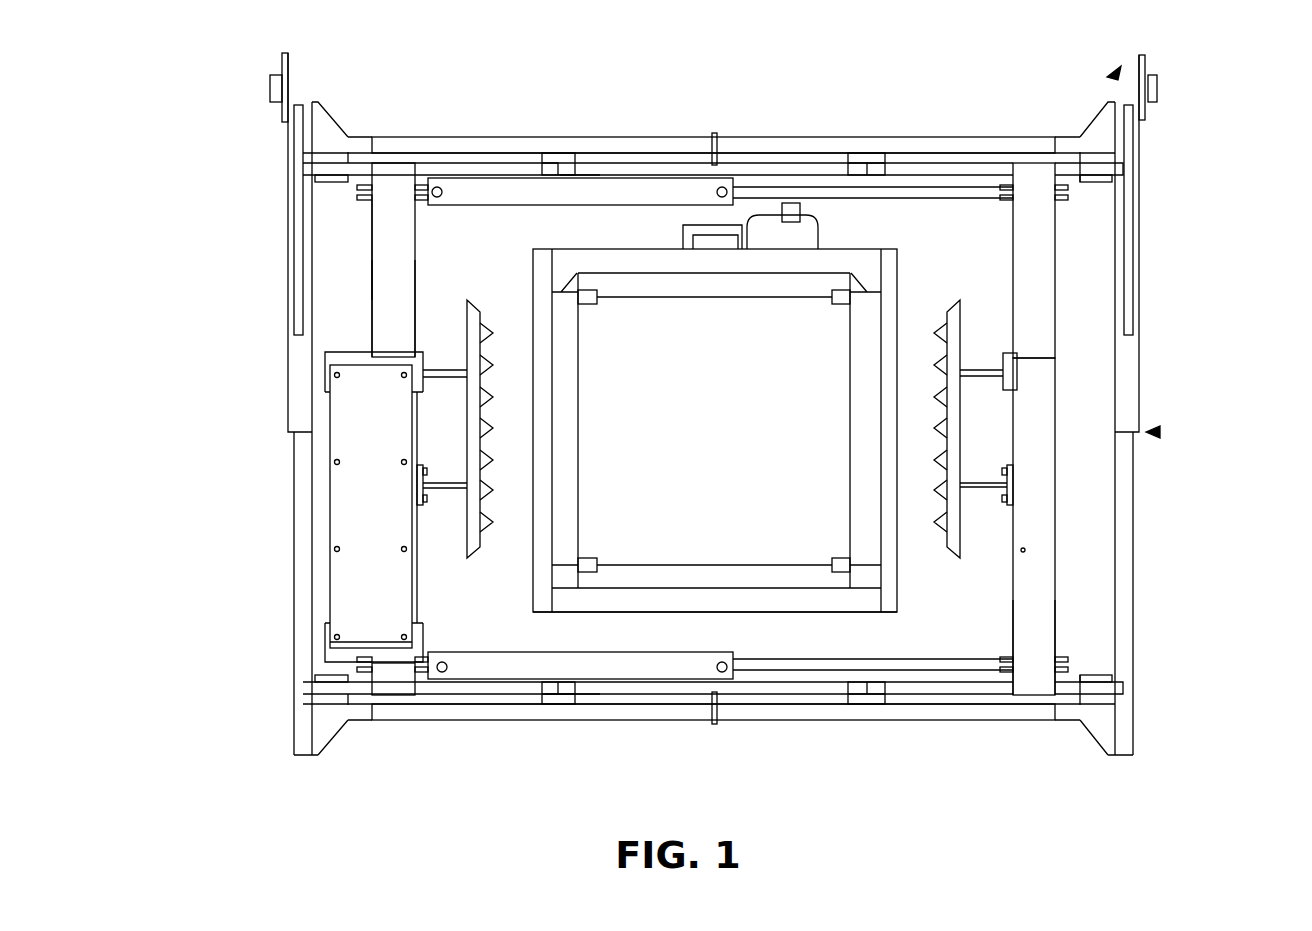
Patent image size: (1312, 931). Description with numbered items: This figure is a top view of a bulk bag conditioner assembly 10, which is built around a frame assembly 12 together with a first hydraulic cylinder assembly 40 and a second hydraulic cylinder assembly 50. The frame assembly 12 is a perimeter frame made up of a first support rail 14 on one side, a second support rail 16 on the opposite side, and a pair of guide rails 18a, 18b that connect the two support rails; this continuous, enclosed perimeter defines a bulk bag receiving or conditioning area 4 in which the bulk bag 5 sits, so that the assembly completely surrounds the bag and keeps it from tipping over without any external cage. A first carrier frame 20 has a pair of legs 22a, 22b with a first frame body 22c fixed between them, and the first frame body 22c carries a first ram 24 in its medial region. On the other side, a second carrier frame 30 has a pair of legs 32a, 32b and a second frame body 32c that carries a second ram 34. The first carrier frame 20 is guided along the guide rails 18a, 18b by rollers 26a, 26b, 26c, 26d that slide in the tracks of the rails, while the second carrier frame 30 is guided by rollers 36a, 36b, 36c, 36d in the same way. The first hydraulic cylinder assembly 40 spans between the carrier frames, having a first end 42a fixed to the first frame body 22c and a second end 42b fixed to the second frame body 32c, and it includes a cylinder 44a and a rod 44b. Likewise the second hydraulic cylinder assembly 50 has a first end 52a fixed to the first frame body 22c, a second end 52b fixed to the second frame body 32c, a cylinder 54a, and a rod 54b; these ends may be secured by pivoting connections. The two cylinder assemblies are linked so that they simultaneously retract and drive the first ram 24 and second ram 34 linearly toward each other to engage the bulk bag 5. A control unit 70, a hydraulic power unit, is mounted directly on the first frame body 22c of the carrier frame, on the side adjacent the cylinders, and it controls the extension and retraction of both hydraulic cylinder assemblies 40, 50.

The bulk bag conditioning area 4 is at (880, 625).
The bulk bag 5 is at (763, 322).
The bulk bag conditioner assembly 10 is at (1118, 72).
The frame assembly 12 is at (1158, 432).
The first support rail 14 is at (300, 555).
The second support rail 16 is at (1130, 515).
The guide rail 18a is at (1060, 135).
The guide rail 18b is at (983, 712).
The first carrier frame 20 is at (395, 245).
The leg 22a is at (487, 168).
The leg 22b is at (458, 690).
The first frame body 22c is at (387, 317).
The first ram 24 is at (470, 435).
The roller 26a is at (330, 158).
The roller 26b is at (560, 152).
The roller 26c is at (332, 700).
The roller 26d is at (560, 695).
The second carrier frame 30 is at (1027, 333).
The leg 32a is at (965, 160).
The leg 32b is at (973, 688).
The second frame body 32c is at (1033, 525).
The second ram 34 is at (955, 405).
The roller 36a is at (873, 157).
The roller 36b is at (1093, 157).
The roller 36c is at (870, 698).
The roller 36d is at (1100, 702).
The first hydraulic cylinder assembly 40 is at (633, 192).
The first end 42a is at (405, 186).
The second end 42b is at (1040, 192).
The cylinder 44a is at (593, 183).
The rod 44b is at (812, 190).
The second hydraulic cylinder assembly 50 is at (715, 665).
The first end 52a is at (360, 688).
The second end 52b is at (1090, 697).
The cylinder 54a is at (660, 660).
The rod 54b is at (805, 668).
The control unit 70 is at (355, 408).